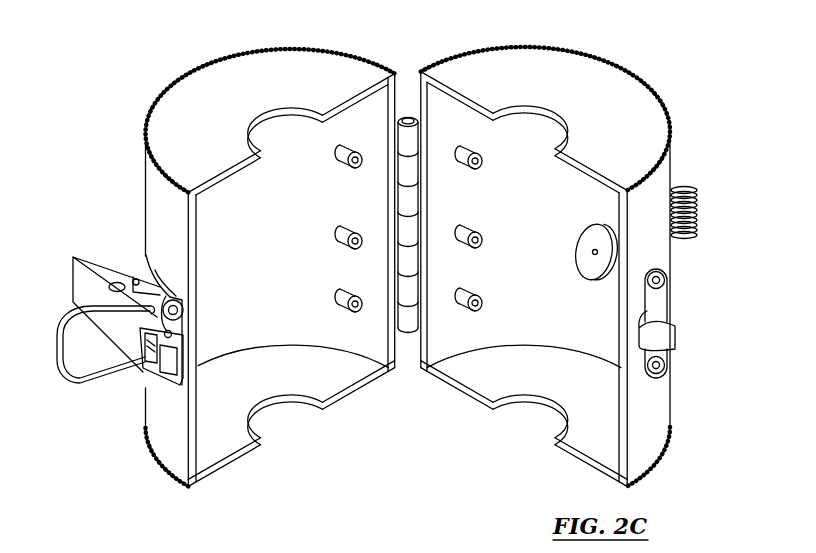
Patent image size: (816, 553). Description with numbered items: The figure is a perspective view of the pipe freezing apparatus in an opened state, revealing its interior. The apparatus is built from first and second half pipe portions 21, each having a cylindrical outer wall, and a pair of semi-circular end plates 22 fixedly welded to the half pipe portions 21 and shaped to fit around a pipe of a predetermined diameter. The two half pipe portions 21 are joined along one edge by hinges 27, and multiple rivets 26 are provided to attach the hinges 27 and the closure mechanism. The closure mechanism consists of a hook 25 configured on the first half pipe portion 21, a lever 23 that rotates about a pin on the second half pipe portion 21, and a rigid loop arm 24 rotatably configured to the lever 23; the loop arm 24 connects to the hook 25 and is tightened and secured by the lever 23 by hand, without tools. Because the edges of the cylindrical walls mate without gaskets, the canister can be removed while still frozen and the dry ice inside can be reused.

The half pipe portion 21 is at (165, 200).
The semi-circular end plate 22 is at (606, 84).
The lever 23 is at (74, 264).
The rigid loop arm 24 is at (70, 383).
The hook 25 is at (650, 340).
The rivets 26 is at (338, 158).
The hinges 27 is at (410, 117).